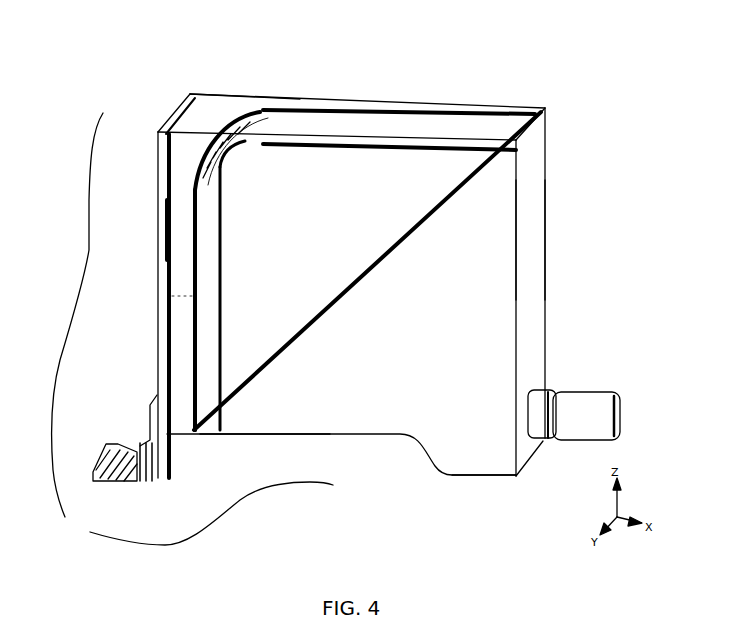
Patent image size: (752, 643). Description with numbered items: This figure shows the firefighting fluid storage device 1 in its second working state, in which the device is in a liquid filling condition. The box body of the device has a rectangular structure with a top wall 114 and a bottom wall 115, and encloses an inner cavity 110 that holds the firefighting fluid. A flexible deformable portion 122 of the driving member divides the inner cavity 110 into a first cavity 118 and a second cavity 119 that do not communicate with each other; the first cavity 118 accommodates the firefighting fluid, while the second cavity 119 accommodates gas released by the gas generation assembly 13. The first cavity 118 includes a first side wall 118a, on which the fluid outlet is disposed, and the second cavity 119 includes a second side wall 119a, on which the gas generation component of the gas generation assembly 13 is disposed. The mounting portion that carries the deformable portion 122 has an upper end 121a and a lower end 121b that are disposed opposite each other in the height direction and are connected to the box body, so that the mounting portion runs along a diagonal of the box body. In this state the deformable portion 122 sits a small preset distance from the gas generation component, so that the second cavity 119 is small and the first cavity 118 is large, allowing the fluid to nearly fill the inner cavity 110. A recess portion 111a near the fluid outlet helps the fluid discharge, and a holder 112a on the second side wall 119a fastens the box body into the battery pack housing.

The firefighting fluid storage device 1 is at (148, 68).
The gas generation assembly 13 is at (578, 402).
The inner cavity 110 is at (192, 329).
The recess portion 111a is at (453, 460).
The holder 112a is at (110, 445).
The top wall 114 is at (216, 103).
The bottom wall 115 is at (237, 434).
The first cavity 118 is at (350, 420).
The first side wall 118a is at (536, 239).
The second cavity 119 is at (183, 152).
The second side wall 119a is at (173, 228).
The upper end 121a is at (513, 110).
The lower end 121b is at (185, 434).
The deformable portion 122 is at (207, 295).